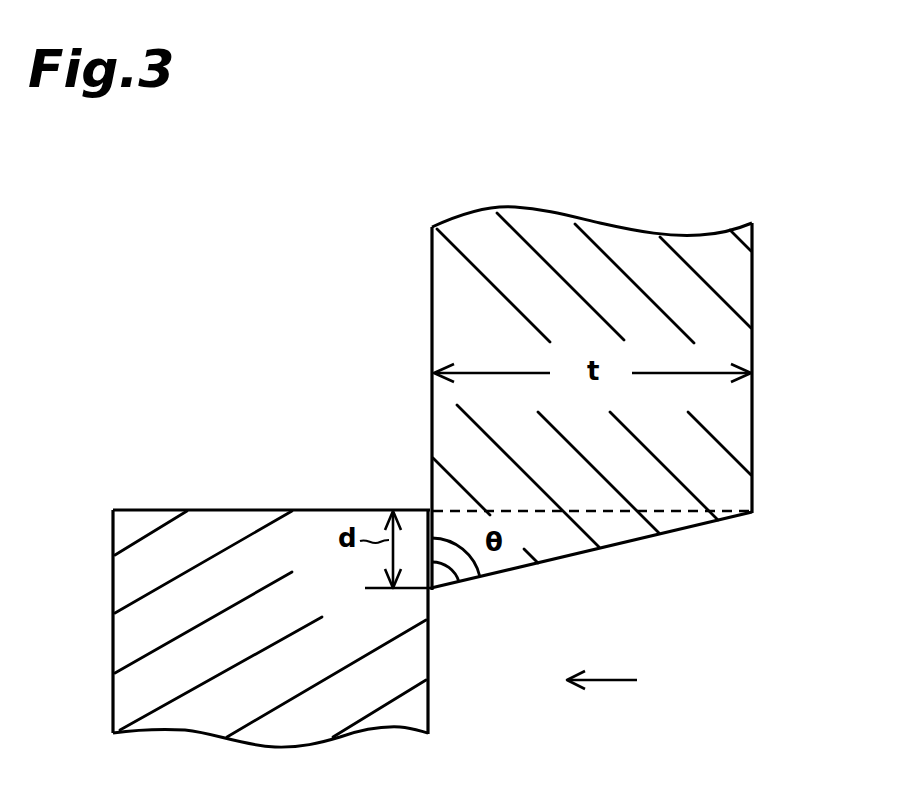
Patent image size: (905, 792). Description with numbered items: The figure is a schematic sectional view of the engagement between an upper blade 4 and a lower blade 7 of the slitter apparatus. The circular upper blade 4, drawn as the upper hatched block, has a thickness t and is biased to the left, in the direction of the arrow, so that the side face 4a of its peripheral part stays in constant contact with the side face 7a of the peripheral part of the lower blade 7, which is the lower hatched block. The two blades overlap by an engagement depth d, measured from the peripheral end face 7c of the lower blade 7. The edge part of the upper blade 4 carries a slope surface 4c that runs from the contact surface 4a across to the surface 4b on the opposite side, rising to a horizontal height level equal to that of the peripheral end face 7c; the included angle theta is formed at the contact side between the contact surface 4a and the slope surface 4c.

The upper blade 4 is at (483, 333).
The side face of peripheral part of the upper blade 4a is at (413, 503).
The surface on the opposite side to the contact surface 4b is at (753, 425).
The slope surface of the edge part of the upper blade 4c is at (621, 546).
The lower blade 7 is at (138, 652).
The side face of peripheral part of the lower blade 7a is at (470, 580).
The peripheral end face of the lower blade 7c is at (230, 507).